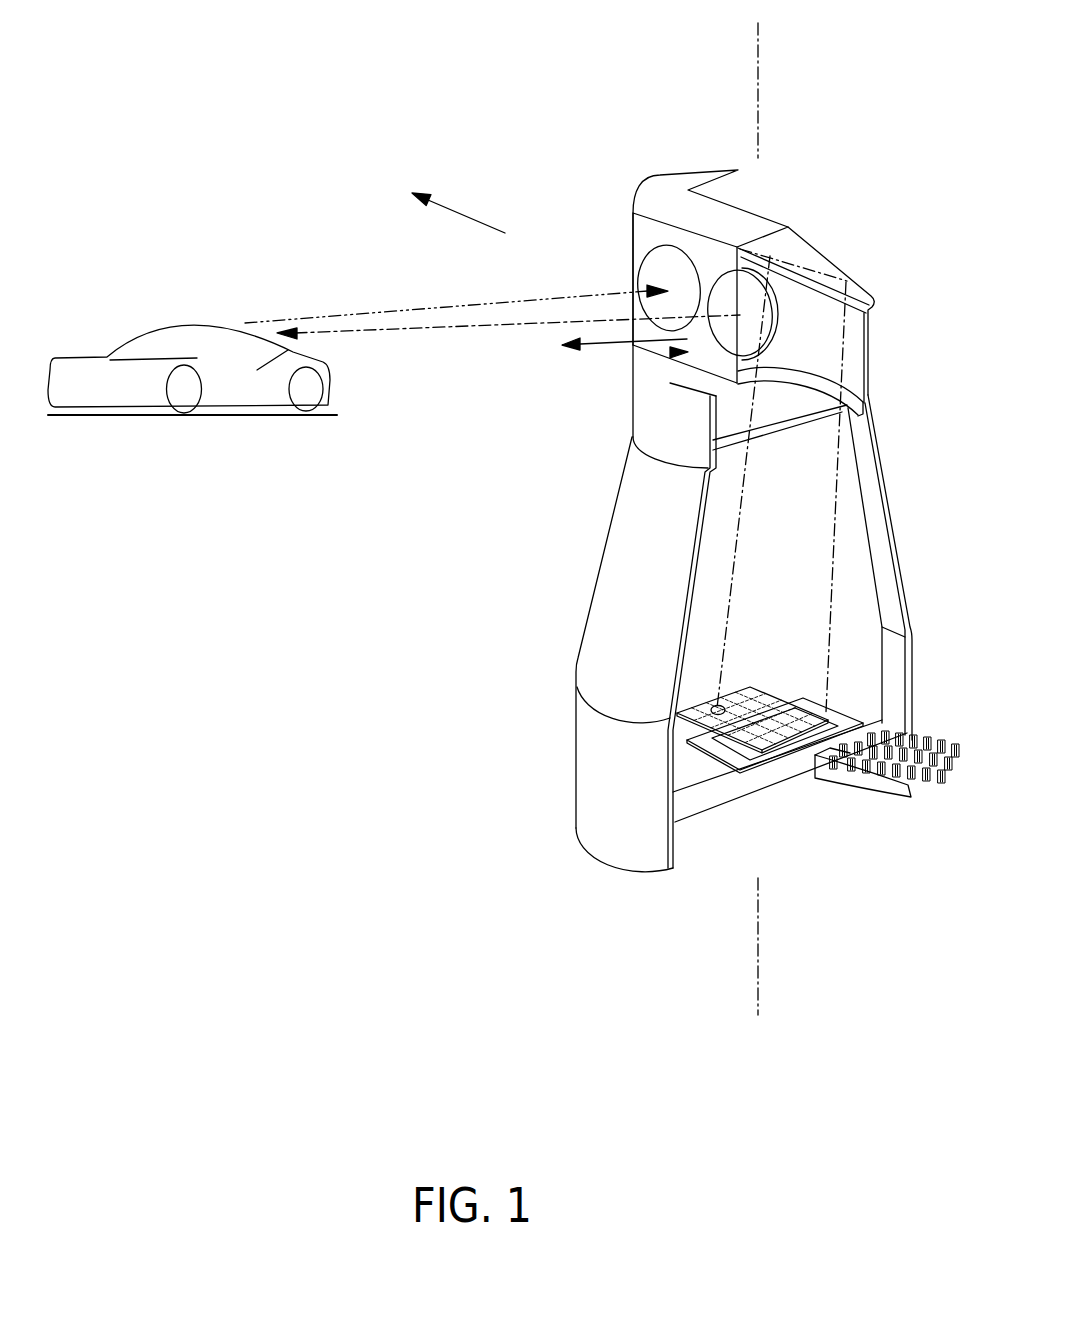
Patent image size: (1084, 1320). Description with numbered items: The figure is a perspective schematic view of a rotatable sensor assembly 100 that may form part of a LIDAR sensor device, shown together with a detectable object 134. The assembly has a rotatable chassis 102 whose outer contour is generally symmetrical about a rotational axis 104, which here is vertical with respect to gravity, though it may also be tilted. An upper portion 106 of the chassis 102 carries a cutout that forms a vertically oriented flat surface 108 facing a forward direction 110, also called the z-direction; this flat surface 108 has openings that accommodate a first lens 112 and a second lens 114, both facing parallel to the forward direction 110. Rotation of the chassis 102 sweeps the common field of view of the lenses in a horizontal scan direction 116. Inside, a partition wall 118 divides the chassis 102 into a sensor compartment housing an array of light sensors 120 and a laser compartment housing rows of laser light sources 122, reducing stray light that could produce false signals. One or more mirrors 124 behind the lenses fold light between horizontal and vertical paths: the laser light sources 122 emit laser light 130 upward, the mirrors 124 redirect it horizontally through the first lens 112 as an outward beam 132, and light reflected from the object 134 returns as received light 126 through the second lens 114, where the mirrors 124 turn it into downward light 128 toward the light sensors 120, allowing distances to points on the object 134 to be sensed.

The rotatable sensor assembly 100 is at (567, 52).
The rotatable chassis 102 is at (640, 187).
The rotational axis 104 is at (762, 55).
The upper portion 106 is at (633, 228).
The flat surface 108 is at (671, 353).
The forward direction 110 is at (592, 345).
The first lens 112 is at (720, 268).
The second lens 114 is at (655, 250).
The scan direction 116 is at (450, 210).
The partition wall 118 is at (848, 510).
The array of light sensors 120 is at (713, 697).
The laser light sources 122 is at (832, 776).
The mirrors 124 is at (848, 267).
The received light 126 is at (478, 303).
The downward light 128 is at (748, 487).
The laser light 130 is at (828, 660).
The outward beam 132 is at (510, 325).
The object 134 is at (152, 330).